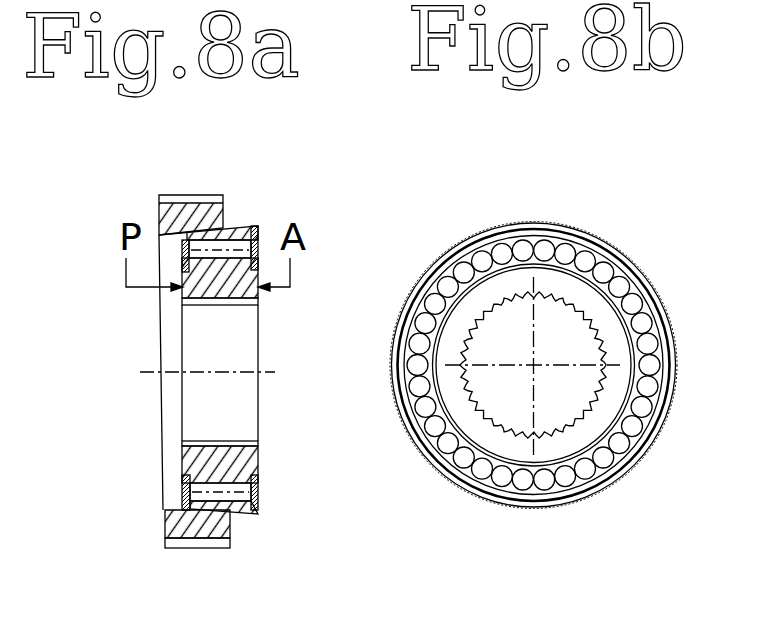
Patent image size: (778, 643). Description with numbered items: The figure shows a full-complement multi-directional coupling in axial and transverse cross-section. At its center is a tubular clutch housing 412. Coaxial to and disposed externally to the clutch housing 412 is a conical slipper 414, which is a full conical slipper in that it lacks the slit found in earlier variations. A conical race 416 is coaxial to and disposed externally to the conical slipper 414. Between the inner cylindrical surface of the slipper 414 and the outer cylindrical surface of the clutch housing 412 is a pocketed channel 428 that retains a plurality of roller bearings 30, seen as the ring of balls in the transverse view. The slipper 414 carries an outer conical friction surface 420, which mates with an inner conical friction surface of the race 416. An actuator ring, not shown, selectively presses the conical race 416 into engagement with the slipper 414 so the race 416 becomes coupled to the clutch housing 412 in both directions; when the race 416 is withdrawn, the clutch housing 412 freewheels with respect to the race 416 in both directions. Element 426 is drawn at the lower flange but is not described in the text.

In FIG. 8B, the roller bearings 30 is at (635, 303).
In FIG. 8A, the tubular clutch housing 412 is at (213, 463).
In FIG. 8B, the tubular clutch housing 412 is at (550, 284).
In FIG. 8A, the conical slipper 414 is at (243, 230).
In FIG. 8B, the conical slipper 414 is at (470, 238).
In FIG. 8A, the conical race 416 is at (178, 217).
In FIG. 8A, the outer conical friction surface 420 is at (238, 513).
In FIG. 8A, the lower flange 426 is at (177, 510).
In FIG. 8B, the pocketed channel 428 is at (430, 445).